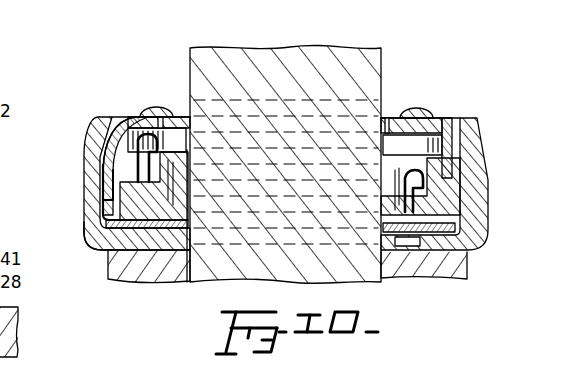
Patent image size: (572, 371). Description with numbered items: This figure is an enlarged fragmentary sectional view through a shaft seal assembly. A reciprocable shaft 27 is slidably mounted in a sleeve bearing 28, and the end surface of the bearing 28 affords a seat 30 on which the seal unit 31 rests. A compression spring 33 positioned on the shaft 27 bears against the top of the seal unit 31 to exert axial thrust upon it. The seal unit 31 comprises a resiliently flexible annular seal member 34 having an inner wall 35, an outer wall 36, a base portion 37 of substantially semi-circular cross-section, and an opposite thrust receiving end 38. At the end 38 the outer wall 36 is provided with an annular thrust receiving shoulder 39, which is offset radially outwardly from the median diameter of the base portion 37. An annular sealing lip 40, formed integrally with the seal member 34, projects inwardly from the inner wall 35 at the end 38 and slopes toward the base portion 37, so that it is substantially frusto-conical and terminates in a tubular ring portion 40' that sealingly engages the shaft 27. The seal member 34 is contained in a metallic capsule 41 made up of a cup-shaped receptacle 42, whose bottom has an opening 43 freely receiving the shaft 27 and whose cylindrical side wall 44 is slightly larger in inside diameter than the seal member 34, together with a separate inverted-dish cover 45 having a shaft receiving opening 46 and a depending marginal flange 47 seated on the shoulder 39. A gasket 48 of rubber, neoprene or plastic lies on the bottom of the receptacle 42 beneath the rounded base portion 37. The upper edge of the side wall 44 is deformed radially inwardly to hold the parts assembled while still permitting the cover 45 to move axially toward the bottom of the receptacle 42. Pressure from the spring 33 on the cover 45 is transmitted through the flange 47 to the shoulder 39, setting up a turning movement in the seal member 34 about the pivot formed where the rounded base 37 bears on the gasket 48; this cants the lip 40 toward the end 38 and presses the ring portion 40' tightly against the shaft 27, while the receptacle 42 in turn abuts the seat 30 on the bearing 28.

The shaft 27 is at (383, 73).
The sleeve bearing 28 is at (125, 282).
The support surface or seat 30 is at (152, 266).
The seal unit 31 is at (86, 135).
The compression spring 33 is at (433, 105).
The seal member or body 34 is at (100, 190).
The inner wall 35 is at (98, 197).
The outer wall 36 is at (100, 168).
The base end or portion 37 is at (127, 212).
The thrust receiving end 38 is at (137, 132).
The thrust receiving shoulder 39 is at (107, 142).
The sealing lip 40 is at (177, 171).
The tubular ring portion 40' is at (220, 216).
The capsule 41 is at (477, 118).
The cup-shaped receptacle 42 is at (479, 252).
The opening 43 is at (418, 247).
The cylindrical side wall portion 44 is at (88, 226).
The cover 45 is at (168, 128).
The shaft receiving opening 46 is at (162, 122).
The depending marginal flange 47 is at (100, 152).
The gasket 48 is at (98, 243).